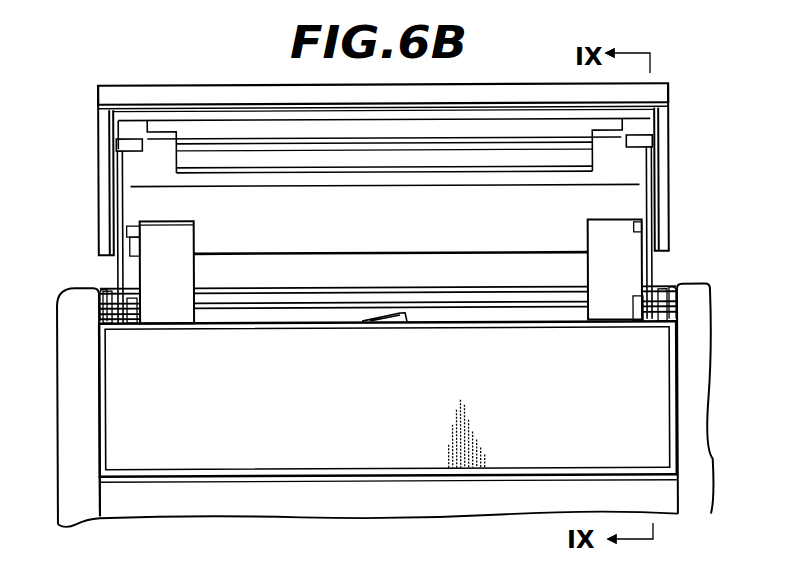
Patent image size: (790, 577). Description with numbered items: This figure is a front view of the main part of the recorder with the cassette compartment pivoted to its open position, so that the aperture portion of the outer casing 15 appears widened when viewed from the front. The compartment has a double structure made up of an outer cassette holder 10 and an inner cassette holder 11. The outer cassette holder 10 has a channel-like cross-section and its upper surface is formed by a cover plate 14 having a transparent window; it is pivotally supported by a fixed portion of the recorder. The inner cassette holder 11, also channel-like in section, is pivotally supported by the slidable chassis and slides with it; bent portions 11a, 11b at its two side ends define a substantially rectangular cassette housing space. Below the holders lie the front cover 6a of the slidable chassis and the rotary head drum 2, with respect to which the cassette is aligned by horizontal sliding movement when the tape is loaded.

The rotary head drum 2 is at (386, 318).
The front cover 6a is at (480, 345).
The outer cassette holder 10 is at (105, 131).
The inner cassette holder 11 is at (128, 172).
The bent portion 11a is at (597, 232).
The bent portion 11b is at (178, 247).
The cover plate 14 is at (238, 93).
The outer casing 15 is at (77, 300).